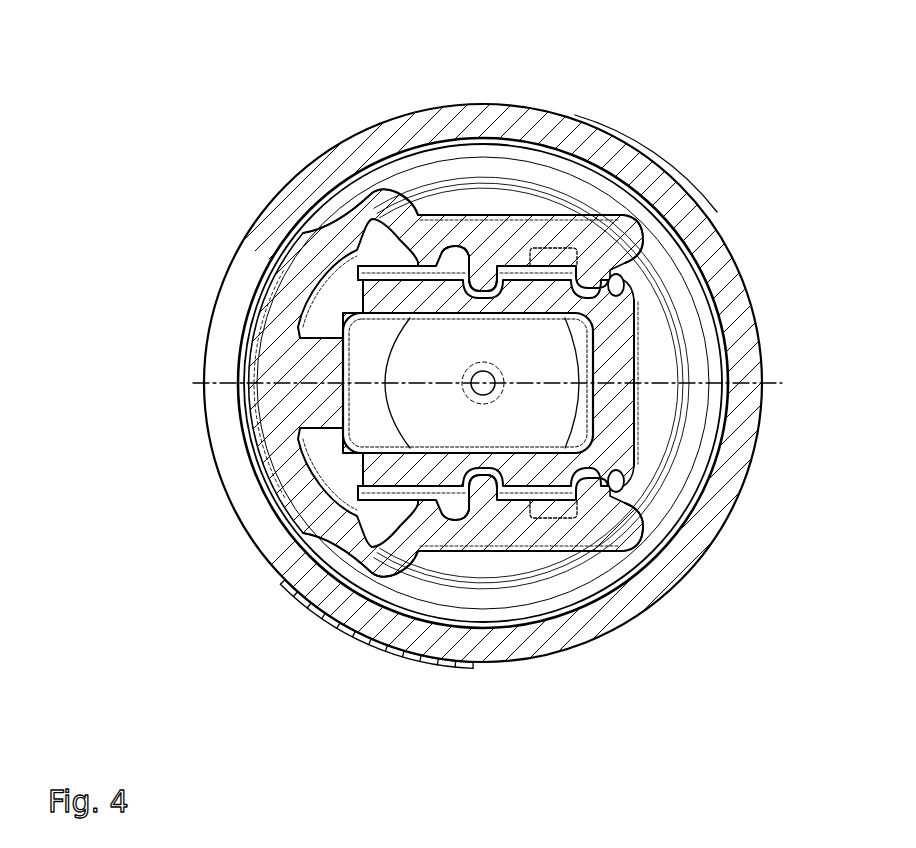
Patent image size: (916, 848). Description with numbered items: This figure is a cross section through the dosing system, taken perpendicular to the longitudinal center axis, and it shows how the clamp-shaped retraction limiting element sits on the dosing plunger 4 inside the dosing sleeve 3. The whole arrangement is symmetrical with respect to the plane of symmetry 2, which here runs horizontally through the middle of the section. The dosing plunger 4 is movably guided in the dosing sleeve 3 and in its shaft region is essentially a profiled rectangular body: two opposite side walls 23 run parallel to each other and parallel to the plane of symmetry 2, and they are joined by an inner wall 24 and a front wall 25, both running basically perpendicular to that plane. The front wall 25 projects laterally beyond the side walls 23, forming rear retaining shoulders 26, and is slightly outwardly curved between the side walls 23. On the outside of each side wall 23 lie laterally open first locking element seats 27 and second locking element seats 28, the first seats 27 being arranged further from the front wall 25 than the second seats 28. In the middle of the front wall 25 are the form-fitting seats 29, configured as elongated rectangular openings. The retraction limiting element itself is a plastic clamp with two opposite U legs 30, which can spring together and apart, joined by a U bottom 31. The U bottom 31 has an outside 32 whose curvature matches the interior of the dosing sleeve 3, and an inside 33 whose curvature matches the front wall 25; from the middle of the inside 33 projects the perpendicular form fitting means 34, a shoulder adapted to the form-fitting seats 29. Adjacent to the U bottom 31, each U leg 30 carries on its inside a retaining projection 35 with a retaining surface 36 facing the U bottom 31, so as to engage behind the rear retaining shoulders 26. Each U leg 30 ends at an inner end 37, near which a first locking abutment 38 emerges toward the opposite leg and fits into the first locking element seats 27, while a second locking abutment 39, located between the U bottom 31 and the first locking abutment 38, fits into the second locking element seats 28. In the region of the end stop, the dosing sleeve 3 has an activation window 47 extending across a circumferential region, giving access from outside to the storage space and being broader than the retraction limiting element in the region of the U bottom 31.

The plane of symmetry 2 is at (193, 383).
The dosing sleeve 3 is at (729, 246).
The dosing plunger 4 is at (637, 382).
The side walls 23 is at (567, 248).
The inner wall 24 is at (623, 400).
The front wall 25 is at (307, 452).
The rear retaining shoulders 26 is at (355, 172).
The first locking element seats 27 is at (612, 253).
The second locking element seats 28 is at (521, 288).
The form-fitting seats 29 is at (317, 340).
The U legs 30 is at (600, 215).
The U bottom 31 is at (287, 268).
The outside 32 is at (300, 433).
The inside 33 is at (287, 502).
The form fitting means 34 is at (313, 377).
The retaining projection 35 is at (437, 250).
The retaining surface 36 is at (374, 215).
The inner end 37 is at (690, 196).
The first locking abutments 38 is at (618, 297).
The second locking abutments 39 is at (482, 292).
The activation window 47 is at (253, 238).